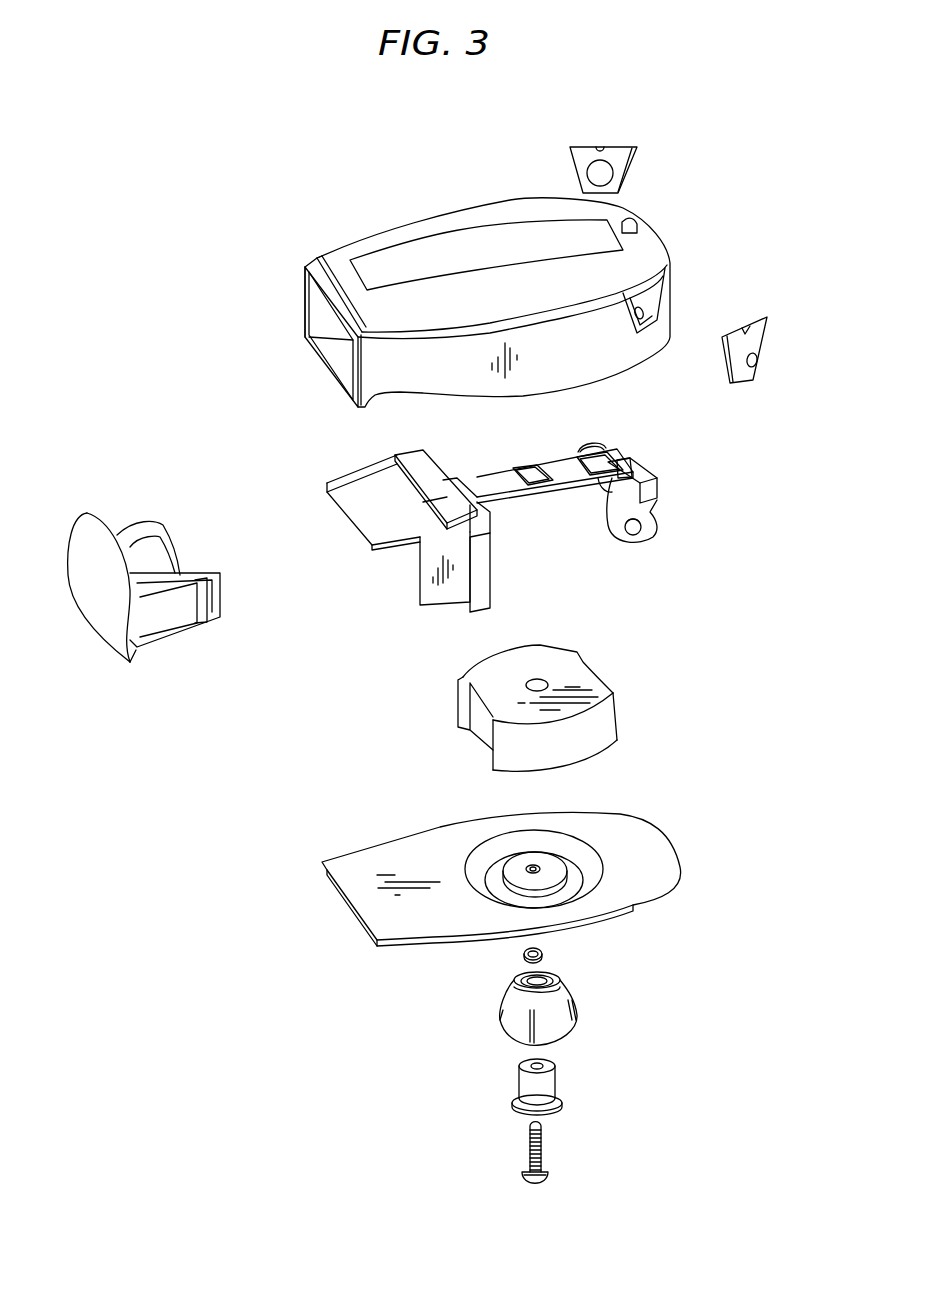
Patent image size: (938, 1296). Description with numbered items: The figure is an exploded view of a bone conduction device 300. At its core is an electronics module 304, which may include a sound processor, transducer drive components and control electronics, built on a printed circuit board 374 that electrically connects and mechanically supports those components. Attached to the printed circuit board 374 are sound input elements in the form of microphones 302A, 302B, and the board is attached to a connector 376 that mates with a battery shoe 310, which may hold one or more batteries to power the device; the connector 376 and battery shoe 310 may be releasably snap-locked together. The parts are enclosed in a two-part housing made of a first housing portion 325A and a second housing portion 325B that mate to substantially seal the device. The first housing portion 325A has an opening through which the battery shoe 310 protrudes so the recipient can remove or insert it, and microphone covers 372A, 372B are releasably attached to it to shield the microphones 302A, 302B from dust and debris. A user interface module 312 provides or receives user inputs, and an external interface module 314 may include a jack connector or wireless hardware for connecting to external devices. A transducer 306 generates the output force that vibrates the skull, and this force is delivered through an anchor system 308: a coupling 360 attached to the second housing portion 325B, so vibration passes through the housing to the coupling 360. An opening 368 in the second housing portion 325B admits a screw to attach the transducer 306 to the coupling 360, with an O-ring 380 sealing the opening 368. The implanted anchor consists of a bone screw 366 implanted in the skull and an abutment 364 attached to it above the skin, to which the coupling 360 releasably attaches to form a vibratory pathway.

The bone conduction device 300 is at (226, 142).
The user interface module 312 is at (491, 226).
The external interface module 314 is at (643, 218).
The first housing portion 325A is at (378, 243).
The microphone cover 372A is at (630, 167).
The microphone cover 372B is at (768, 360).
The electronics module 304 is at (678, 471).
The printed circuit board 374 is at (533, 458).
The connector 376 is at (413, 590).
The microphone 302A is at (588, 442).
The microphone 302B is at (657, 533).
The battery shoe 310 is at (82, 617).
The transducer 306 is at (600, 745).
The second housing portion 325B is at (382, 843).
The opening 368 is at (543, 868).
The O-ring 380 is at (545, 953).
The coupling 360 is at (500, 1000).
The abutment 364 is at (517, 1080).
The bone screw 366 is at (527, 1152).
The anchor system 308 is at (358, 1065).